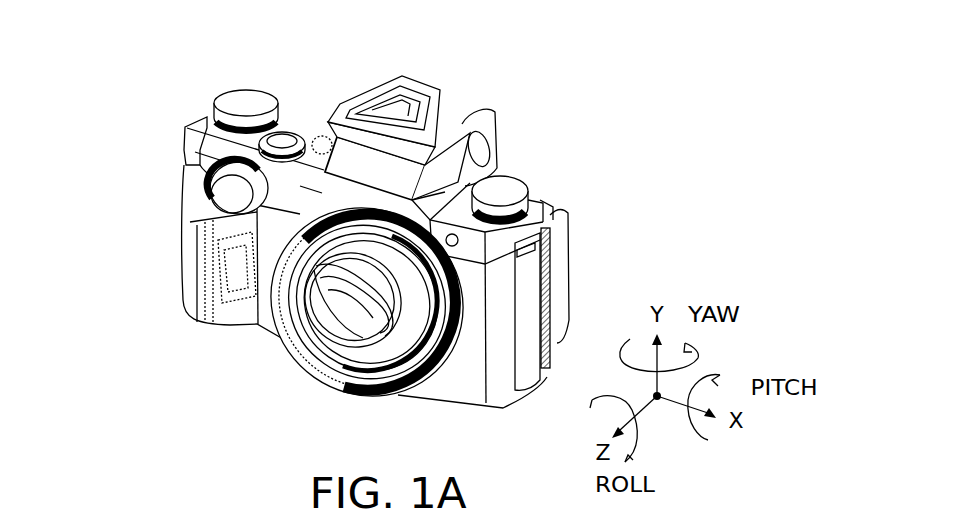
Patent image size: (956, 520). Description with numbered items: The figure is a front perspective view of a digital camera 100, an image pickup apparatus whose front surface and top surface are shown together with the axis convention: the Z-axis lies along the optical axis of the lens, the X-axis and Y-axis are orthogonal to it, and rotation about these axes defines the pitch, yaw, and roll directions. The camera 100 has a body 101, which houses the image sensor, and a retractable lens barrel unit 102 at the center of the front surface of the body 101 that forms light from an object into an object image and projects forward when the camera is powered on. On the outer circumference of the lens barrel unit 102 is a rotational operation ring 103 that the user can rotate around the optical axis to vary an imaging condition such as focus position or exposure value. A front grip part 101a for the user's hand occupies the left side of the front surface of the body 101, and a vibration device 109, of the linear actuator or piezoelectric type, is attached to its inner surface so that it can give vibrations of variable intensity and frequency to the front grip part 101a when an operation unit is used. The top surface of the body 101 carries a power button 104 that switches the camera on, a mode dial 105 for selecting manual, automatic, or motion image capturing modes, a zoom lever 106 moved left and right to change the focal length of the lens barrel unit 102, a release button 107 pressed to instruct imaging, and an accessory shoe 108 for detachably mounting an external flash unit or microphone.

The camera 100 is at (590, 177).
The body 101 is at (456, 380).
The front grip part 101a is at (182, 230).
The lens barrel unit 102 is at (353, 322).
The rotational operation ring 103 is at (452, 352).
The power button 104 is at (323, 138).
The mode dial 105 is at (248, 104).
The zoom lever 106 is at (330, 150).
The release button 107 is at (282, 136).
The accessory shoe 108 is at (460, 105).
The vibration device 109 is at (228, 272).